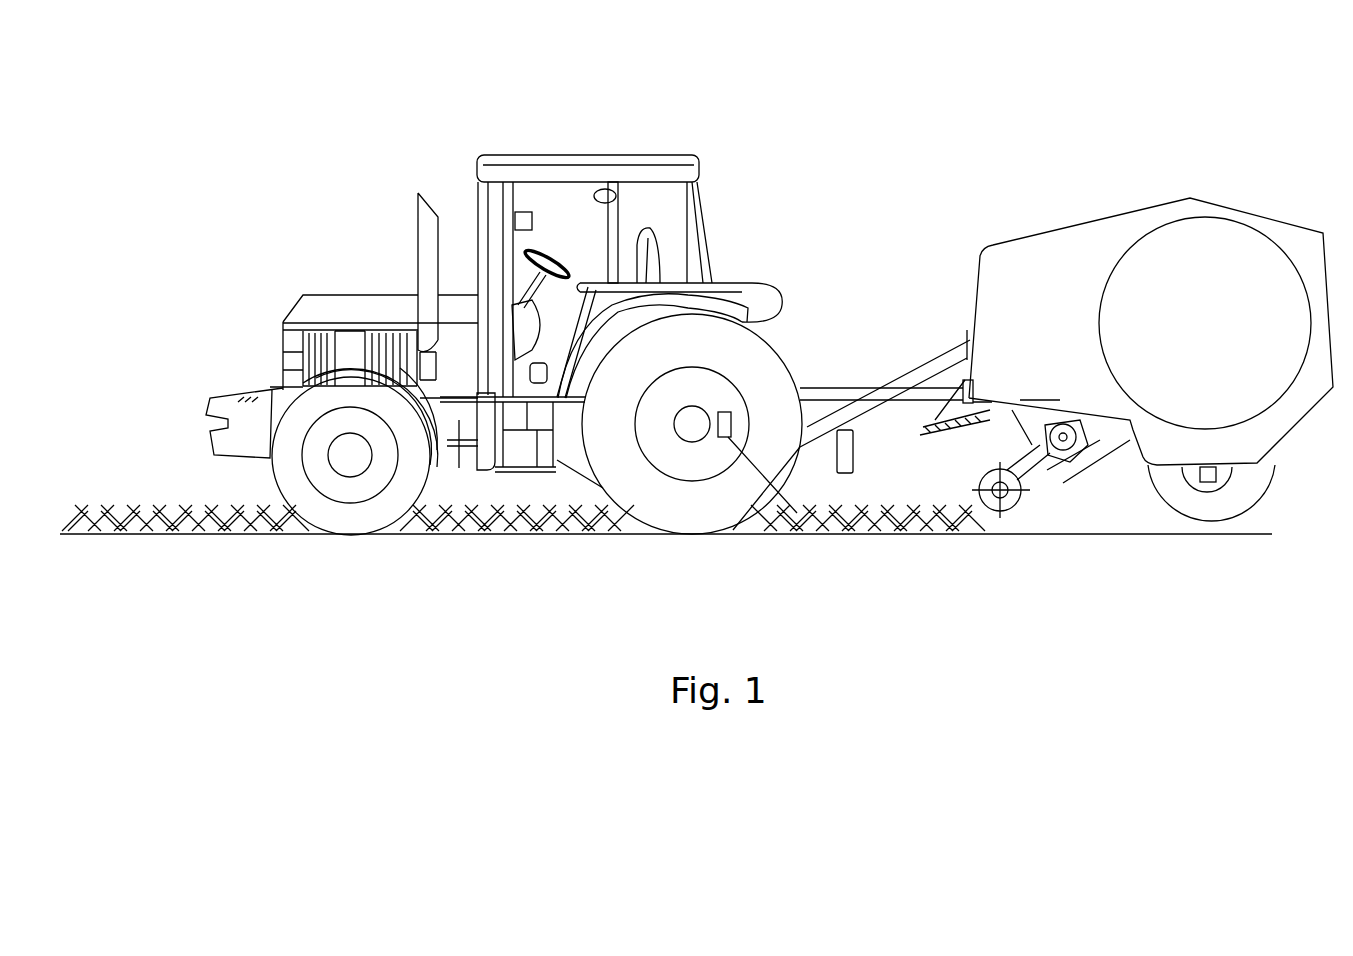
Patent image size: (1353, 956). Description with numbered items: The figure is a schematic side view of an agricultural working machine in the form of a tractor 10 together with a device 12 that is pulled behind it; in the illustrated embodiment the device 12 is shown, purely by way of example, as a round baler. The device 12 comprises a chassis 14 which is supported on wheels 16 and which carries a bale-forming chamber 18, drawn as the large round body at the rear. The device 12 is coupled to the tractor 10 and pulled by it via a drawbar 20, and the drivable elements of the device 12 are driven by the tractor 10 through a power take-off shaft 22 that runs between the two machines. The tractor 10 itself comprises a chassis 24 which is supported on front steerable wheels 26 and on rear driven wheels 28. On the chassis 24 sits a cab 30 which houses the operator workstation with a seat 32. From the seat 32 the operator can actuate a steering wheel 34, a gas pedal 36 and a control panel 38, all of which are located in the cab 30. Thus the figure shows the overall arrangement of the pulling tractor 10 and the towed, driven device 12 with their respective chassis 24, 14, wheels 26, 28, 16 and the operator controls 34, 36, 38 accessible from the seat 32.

The tractor 10 is at (512, 132).
The device 12 is at (1079, 168).
The chassis 14 is at (1290, 413).
The wheels 16 is at (1247, 510).
The bale-forming chamber 18 is at (1238, 255).
The drawbar 20 is at (925, 362).
The power take-off shaft 22 is at (823, 392).
The chassis 24 is at (451, 520).
The front steerable wheels 26 is at (348, 515).
The rear driven wheels 28 is at (693, 508).
The cab 30 is at (695, 178).
The seat 32 is at (652, 247).
The steering wheel 34 is at (548, 250).
The gas pedal 36 is at (512, 383).
The control panel 38 is at (470, 197).